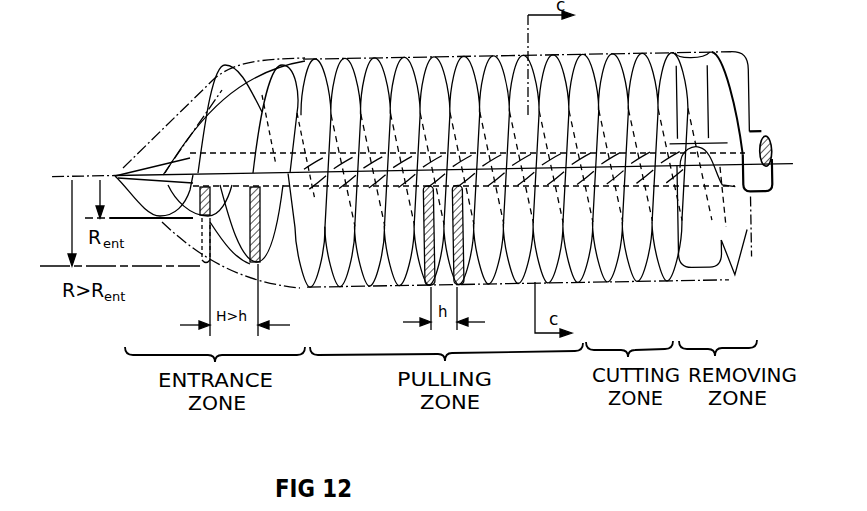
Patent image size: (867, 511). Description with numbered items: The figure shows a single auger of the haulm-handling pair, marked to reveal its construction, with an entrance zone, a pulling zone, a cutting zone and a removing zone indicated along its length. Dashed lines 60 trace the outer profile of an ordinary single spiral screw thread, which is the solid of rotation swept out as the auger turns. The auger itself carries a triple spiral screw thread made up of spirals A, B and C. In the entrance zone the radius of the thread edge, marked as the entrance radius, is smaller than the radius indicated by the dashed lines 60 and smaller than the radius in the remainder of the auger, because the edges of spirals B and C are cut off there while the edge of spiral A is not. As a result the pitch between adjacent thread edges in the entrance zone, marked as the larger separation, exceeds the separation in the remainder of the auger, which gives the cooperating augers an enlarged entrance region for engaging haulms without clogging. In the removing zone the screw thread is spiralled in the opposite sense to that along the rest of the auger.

The dashed lines 60 is at (160, 127).
The spiral A is at (217, 97).
The spiral B is at (267, 77).
The spiral C is at (307, 70).